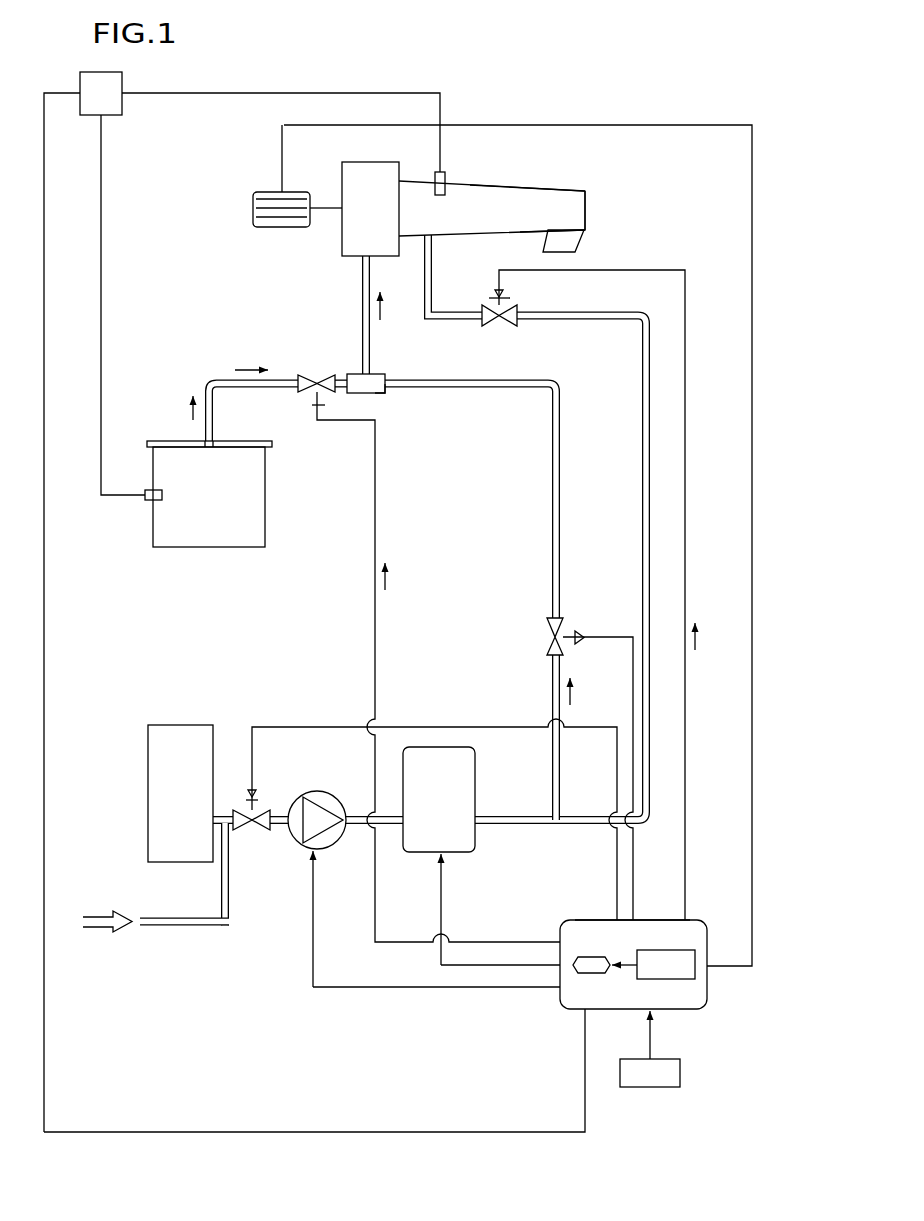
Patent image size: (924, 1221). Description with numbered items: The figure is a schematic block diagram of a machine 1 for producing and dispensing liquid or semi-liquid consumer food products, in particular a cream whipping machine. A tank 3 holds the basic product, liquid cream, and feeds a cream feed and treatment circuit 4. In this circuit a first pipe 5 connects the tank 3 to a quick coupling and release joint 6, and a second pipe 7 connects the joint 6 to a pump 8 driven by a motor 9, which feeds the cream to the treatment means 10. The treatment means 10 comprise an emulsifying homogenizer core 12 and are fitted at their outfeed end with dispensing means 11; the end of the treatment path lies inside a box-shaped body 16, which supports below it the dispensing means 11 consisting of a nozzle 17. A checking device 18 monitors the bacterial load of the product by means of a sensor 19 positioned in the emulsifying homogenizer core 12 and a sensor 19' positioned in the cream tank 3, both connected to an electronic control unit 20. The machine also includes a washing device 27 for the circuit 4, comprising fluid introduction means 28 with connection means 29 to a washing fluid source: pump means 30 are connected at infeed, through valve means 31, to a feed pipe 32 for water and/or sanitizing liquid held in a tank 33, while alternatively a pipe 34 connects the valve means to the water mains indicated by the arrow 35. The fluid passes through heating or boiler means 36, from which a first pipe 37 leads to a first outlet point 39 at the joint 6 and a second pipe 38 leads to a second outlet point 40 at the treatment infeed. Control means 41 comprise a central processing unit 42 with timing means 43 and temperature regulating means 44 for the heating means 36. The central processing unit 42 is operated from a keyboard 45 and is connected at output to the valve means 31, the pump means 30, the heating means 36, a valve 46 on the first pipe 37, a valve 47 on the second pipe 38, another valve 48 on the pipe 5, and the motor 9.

The machine 1 is at (707, 92).
The tank 3 is at (210, 510).
The cream feed and treatment circuit 4 is at (480, 185).
The first pipe 5 is at (205, 435).
The quick coupling and release joint 6 is at (372, 383).
The second pipe 7 is at (360, 277).
The pump 8 is at (361, 221).
The motor 9 is at (260, 198).
The treatment means 10 is at (510, 182).
The dispensing means 11 is at (582, 240).
The emulsifying homogenizer core 12 is at (468, 176).
The box-shaped body 16 is at (552, 187).
The nozzle 17 is at (562, 247).
The checking device 18 is at (430, 168).
The sensor 19 is at (462, 119).
The sensor 19' is at (125, 533).
The electronic control unit 20 is at (89, 106).
The washing device 27 is at (520, 830).
The fluid introduction means 28 is at (248, 875).
The connection means 29 is at (268, 795).
The pump means 30 is at (318, 790).
The valve means 31 is at (237, 807).
The feed pipe 32 is at (220, 817).
The tank 33 is at (180, 793).
The pipe 34 is at (183, 925).
The water mains 35 is at (100, 927).
The heating means 36 is at (439, 799).
The first pipe 37 is at (560, 523).
The second pipe 38 is at (650, 573).
The first outlet point 39 is at (387, 393).
The second outlet point 40 is at (427, 230).
The control means 41 is at (698, 913).
The central processing unit 42 is at (697, 937).
The timing means 43 is at (683, 968).
The temperature regulating means 44 is at (577, 962).
The keyboard 45 is at (672, 1073).
The valve 46 is at (545, 634).
The valve 47 is at (505, 323).
The valve 48 is at (313, 395).